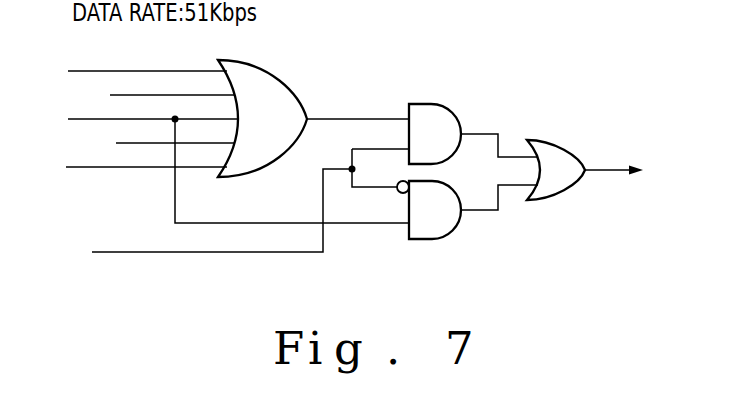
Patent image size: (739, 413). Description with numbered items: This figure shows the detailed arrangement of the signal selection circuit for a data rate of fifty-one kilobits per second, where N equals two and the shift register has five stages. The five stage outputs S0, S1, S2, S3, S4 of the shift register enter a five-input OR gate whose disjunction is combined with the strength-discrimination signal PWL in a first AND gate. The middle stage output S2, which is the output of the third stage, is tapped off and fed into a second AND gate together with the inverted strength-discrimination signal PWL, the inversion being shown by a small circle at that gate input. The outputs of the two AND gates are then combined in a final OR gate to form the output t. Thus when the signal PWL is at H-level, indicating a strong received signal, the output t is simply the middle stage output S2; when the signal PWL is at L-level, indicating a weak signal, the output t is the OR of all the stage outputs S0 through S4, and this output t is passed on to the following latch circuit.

The first stage output S0 is at (128, 72).
The second stage output S1 is at (154, 96).
The third stage output S2 is at (133, 120).
The fourth stage output S3 is at (154, 144).
The fifth stage output S4 is at (128, 168).
The strength-discrimination signal PWL is at (193, 215).
The selection circuit output t is at (623, 173).